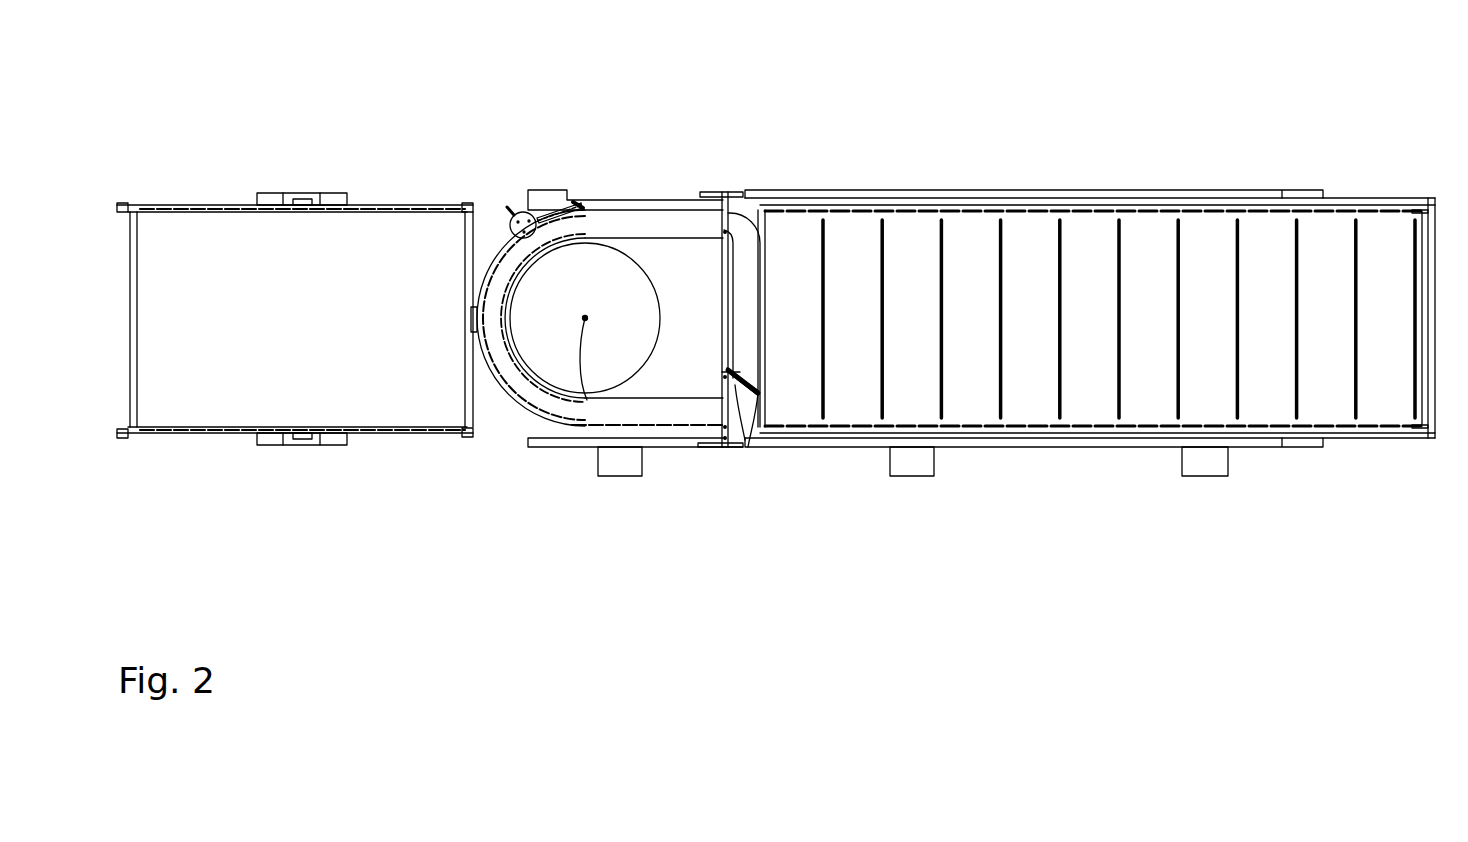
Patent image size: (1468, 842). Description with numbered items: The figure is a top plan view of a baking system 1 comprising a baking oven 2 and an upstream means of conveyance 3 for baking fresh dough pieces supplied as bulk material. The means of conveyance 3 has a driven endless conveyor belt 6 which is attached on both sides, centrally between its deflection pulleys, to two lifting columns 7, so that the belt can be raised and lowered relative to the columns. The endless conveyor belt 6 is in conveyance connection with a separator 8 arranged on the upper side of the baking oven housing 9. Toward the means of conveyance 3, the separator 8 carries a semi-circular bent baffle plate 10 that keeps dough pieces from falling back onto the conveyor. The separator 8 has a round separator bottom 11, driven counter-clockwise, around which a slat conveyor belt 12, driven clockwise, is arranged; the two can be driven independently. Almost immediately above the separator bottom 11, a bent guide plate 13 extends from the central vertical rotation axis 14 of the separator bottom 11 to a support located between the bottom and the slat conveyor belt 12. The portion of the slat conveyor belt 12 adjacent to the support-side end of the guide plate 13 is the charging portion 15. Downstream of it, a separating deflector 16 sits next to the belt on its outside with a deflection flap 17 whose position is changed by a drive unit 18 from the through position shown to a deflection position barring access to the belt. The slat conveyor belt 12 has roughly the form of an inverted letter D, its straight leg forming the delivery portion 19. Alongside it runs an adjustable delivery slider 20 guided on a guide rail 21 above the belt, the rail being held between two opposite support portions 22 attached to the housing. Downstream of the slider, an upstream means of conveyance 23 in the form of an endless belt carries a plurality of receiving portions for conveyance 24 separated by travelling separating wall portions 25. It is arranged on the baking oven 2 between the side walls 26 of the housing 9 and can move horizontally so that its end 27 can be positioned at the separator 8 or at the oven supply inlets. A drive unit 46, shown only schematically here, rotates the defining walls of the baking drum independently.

The baking system 1 is at (995, 112).
The baking oven 2 is at (1034, 186).
The means of conveyance 3 is at (369, 200).
The endless conveyor belt 6 is at (213, 237).
The lifting columns 7 is at (325, 200).
The separator 8 is at (707, 206).
The baking oven housing 9 is at (1015, 455).
The baffle plate 10 is at (498, 390).
The separator bottom 11 is at (633, 358).
The slat conveyor belt 12 is at (658, 210).
The guide plate 13 is at (578, 357).
The rotation axis 14 is at (585, 318).
The charging portion 15 is at (570, 413).
The separating deflector 16 is at (540, 202).
The deflection flap 17 is at (576, 202).
The drive unit 18 is at (510, 220).
The delivery portion 19 is at (748, 272).
The delivery slider 20 is at (745, 425).
The guide rail 21 is at (755, 213).
The support portions 22 is at (725, 200).
The upstream means of conveyance 23 is at (1081, 236).
The receiving portions for conveyance 24 is at (1198, 287).
The separating wall portions 25 is at (1293, 248).
The side walls 26 is at (1143, 193).
The end 27 is at (800, 226).
The drive unit 46 is at (618, 462).